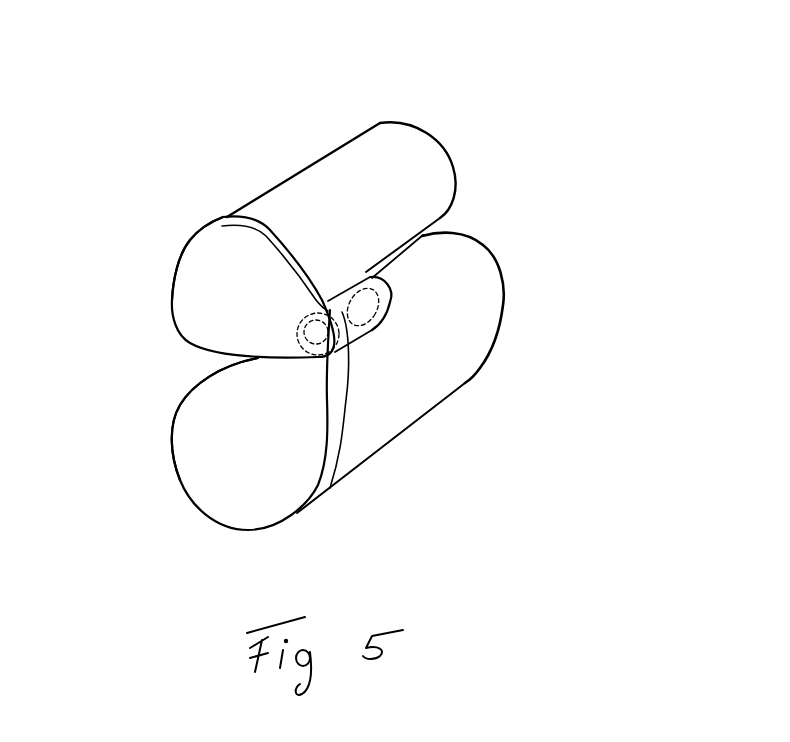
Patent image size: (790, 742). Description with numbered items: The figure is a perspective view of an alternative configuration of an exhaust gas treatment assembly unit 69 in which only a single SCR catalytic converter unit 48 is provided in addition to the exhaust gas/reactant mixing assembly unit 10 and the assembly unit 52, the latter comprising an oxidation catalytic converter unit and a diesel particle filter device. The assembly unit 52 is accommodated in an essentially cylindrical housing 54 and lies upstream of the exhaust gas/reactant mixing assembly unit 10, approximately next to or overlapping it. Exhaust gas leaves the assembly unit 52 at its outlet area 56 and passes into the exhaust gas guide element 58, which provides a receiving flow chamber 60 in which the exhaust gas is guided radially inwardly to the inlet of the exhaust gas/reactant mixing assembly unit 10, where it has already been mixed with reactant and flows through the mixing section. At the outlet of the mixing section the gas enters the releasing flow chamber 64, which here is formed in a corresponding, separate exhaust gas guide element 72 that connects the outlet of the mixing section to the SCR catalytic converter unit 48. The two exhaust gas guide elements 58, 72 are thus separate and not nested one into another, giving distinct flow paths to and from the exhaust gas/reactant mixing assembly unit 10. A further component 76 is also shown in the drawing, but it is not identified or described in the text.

The exhaust gas/reactant mixing assembly unit 10 is at (543, 178).
The SCR catalytic converter unit 48 is at (438, 402).
The assembly unit 52 is at (318, 117).
The cylindrical housing 54 is at (380, 124).
The outlet area 56 is at (227, 218).
The exhaust gas guide element 58 is at (182, 257).
The receiving flow chamber 60 is at (210, 287).
The releasing flow chamber 64 is at (215, 470).
The exhaust gas treatment assembly unit 69 is at (557, 52).
The exhaust gas guide element 72 is at (177, 437).
The connecting web 76 is at (372, 497).